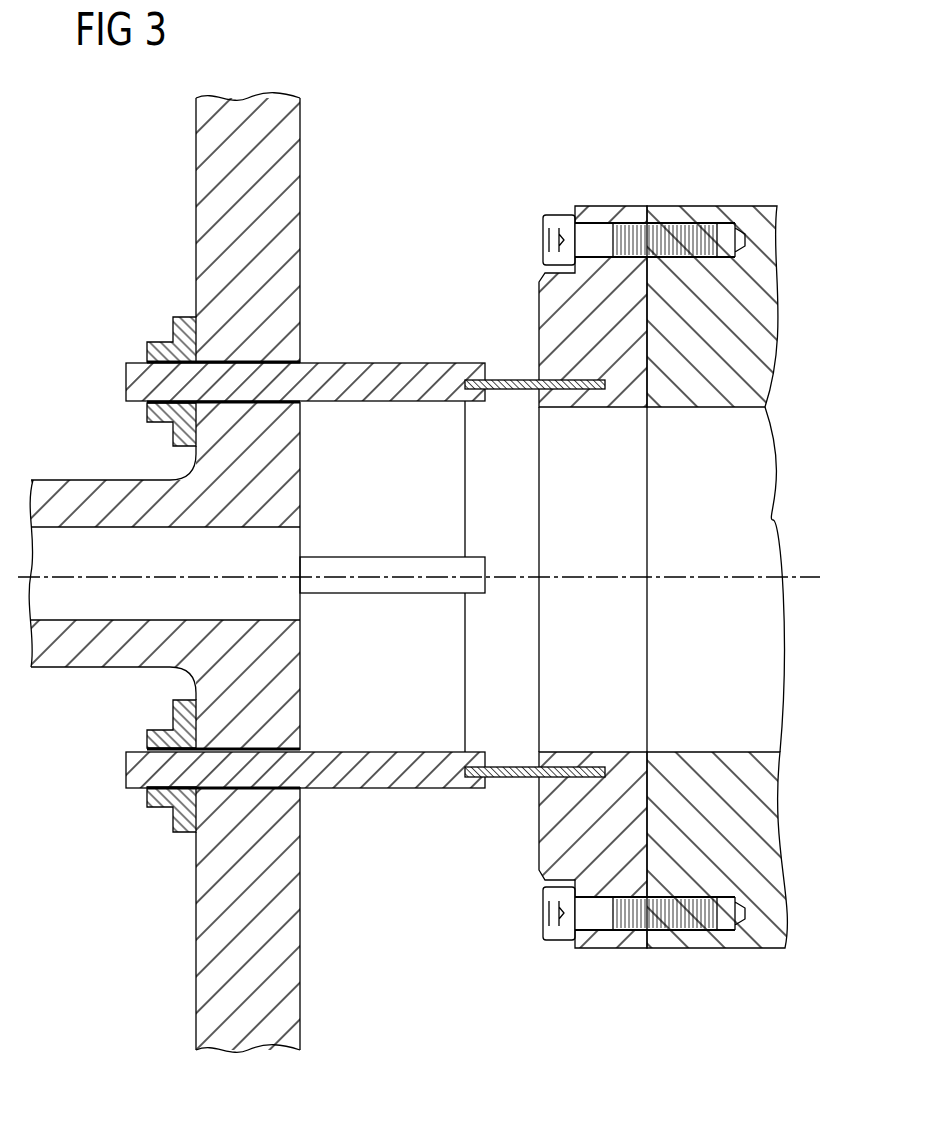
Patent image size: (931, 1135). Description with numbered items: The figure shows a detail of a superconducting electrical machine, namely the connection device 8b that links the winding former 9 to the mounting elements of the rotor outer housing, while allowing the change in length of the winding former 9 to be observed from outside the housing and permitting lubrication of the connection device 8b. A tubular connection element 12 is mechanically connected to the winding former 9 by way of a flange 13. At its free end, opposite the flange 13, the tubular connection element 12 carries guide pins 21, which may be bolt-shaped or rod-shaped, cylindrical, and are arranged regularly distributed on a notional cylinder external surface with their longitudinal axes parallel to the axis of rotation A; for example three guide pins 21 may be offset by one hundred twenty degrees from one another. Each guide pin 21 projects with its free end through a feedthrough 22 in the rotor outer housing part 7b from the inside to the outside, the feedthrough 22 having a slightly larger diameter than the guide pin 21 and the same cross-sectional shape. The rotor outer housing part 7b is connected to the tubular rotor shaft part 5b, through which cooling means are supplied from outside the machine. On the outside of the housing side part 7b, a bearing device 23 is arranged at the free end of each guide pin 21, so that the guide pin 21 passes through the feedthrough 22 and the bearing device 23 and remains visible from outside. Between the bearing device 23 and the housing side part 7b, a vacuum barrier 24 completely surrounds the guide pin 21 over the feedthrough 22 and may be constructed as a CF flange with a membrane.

The rotor outer housing part 7b is at (207, 182).
The tubular rotor shaft part 5b is at (87, 492).
The guide pin 21 is at (388, 585).
The feedthrough 22 is at (140, 789).
The bearing device 23 is at (147, 727).
The vacuum barrier 24 is at (200, 790).
The tubular connection element 12 is at (503, 380).
The flange 13 is at (647, 206).
The winding former 9 is at (717, 536).
The connection device 8b is at (471, 983).
The axis of rotation A is at (800, 577).